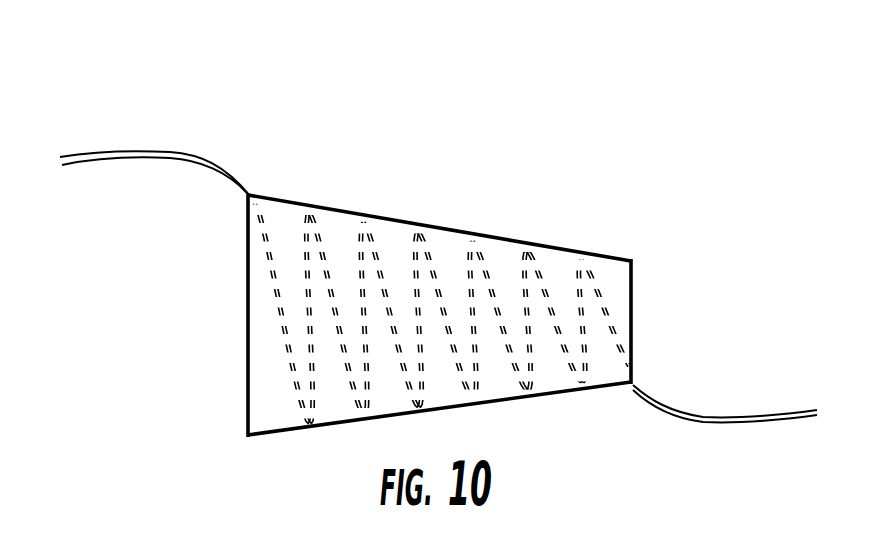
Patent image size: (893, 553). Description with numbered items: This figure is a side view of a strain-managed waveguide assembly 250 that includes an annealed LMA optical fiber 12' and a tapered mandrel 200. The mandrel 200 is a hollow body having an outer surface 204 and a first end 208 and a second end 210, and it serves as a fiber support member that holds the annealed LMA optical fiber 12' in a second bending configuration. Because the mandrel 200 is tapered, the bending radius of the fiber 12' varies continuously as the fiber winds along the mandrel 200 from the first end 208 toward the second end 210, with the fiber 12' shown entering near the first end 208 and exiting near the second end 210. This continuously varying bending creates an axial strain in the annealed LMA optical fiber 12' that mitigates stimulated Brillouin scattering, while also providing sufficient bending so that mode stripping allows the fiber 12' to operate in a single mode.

The annealed LMA optical fiber 12' is at (438, 239).
The strain-managed waveguide assembly 250 is at (271, 115).
The tapered mandrel 200 is at (454, 216).
The outer surface 204 is at (577, 250).
The first end 208 is at (248, 353).
The second end 210 is at (633, 295).